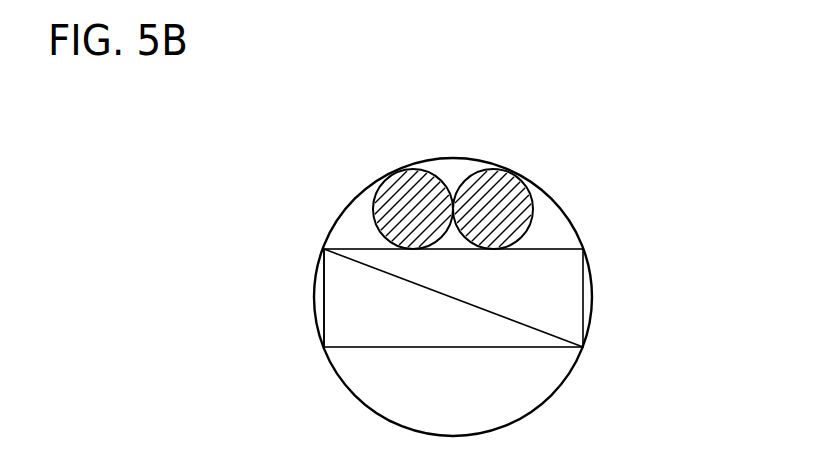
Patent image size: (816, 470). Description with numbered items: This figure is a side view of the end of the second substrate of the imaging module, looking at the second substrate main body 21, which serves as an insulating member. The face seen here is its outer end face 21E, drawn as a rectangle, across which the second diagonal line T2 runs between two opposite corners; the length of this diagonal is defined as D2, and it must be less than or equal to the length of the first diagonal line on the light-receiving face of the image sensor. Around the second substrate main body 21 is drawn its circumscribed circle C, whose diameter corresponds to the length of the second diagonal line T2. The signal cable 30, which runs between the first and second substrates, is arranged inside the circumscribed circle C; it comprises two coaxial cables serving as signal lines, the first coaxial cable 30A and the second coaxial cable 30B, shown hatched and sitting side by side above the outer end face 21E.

The signal cable 30 is at (380, 185).
The first coaxial cable 30A is at (397, 192).
The second coaxial cable 30B is at (483, 192).
The second substrate main body 21 is at (445, 261).
The outer end face 21E is at (357, 303).
The second diagonal line T2 is at (498, 306).
The circumscribed circle C is at (573, 370).